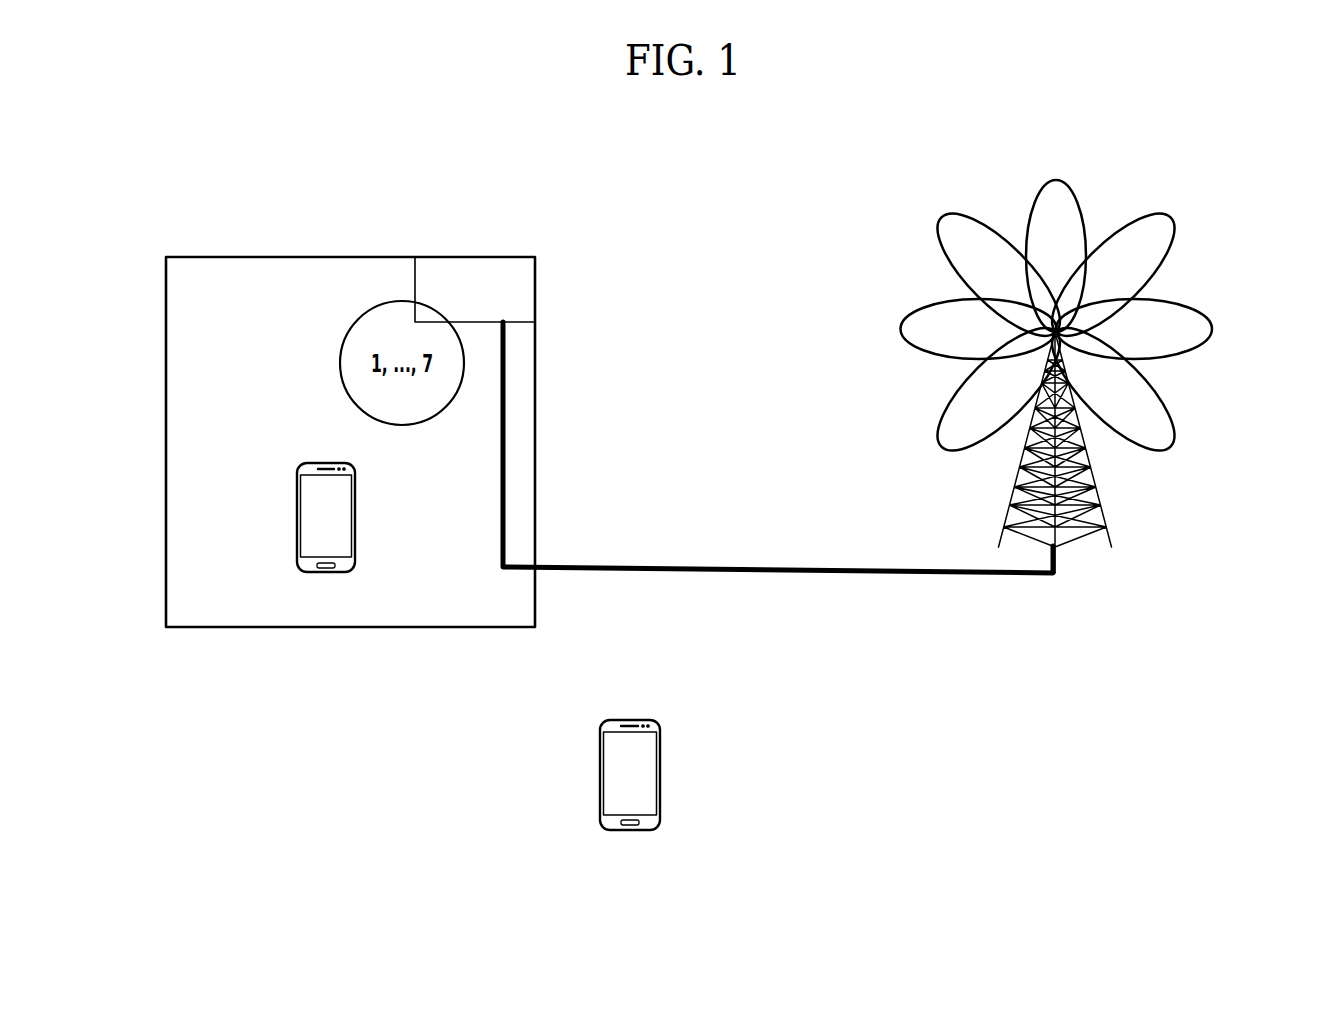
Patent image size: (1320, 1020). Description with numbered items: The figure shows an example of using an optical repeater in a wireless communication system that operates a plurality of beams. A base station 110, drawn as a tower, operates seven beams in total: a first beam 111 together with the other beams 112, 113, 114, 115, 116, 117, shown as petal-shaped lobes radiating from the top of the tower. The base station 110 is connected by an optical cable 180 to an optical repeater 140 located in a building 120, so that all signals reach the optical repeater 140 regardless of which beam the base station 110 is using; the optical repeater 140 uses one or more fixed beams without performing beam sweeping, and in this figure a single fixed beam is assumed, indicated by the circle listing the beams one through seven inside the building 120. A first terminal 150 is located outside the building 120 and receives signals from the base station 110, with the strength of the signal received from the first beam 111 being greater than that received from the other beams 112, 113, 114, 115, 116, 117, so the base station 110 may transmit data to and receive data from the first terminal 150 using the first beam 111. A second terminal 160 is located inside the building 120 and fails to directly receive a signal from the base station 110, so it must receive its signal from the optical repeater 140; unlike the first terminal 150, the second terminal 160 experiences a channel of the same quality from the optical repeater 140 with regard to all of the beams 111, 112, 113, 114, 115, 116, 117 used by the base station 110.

The base station 110 is at (1100, 493).
The first beam 111 is at (940, 421).
The second beam 112 is at (902, 326).
The third beam 113 is at (943, 226).
The fourth beam 114 is at (1078, 190).
The fifth beam 115 is at (1170, 228).
The sixth beam 116 is at (1210, 333).
The seventh beam 117 is at (1173, 433).
The building 120 is at (235, 627).
The optical repeater 140 is at (527, 292).
The first terminal 150 is at (660, 775).
The second terminal 160 is at (355, 518).
The optical cable 180 is at (763, 565).